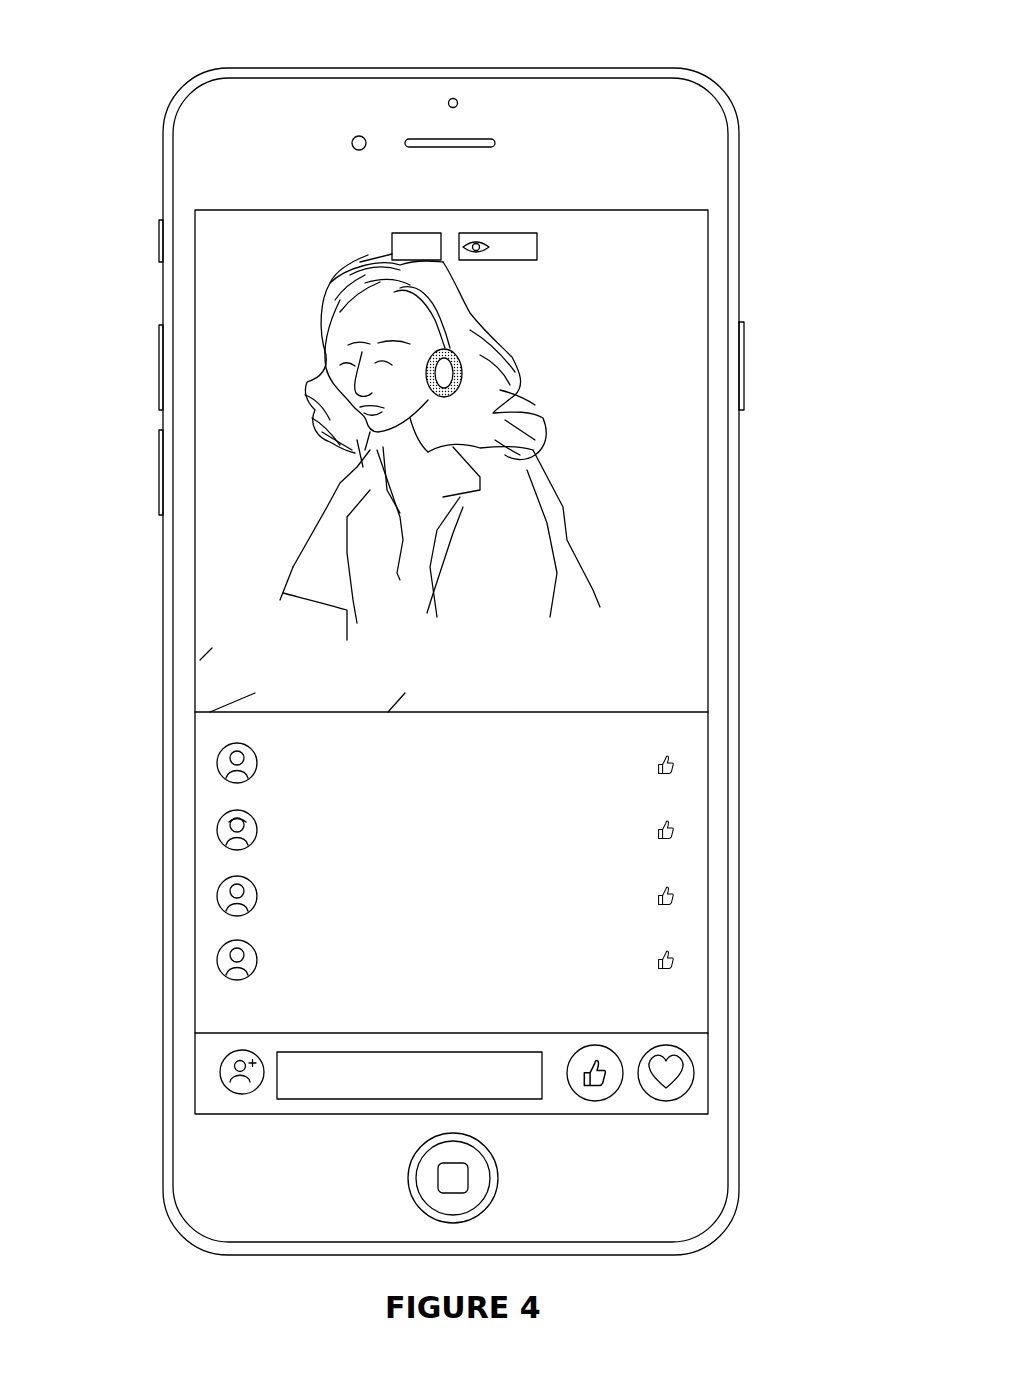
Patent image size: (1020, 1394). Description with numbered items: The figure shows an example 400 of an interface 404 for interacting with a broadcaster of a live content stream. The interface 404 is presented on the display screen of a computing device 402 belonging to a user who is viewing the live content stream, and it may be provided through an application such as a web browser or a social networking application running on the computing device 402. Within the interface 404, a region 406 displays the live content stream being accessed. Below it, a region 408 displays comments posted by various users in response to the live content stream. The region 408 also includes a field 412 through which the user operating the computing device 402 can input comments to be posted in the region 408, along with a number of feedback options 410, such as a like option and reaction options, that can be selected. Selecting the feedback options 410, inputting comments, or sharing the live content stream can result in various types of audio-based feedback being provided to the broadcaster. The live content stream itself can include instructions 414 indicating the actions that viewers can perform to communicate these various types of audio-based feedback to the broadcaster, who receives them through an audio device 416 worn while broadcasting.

The example 400 is at (113, 43).
The computing device 402 is at (741, 180).
The interface 404 is at (190, 290).
The region 406 is at (245, 413).
The region 408 is at (228, 755).
The feedback options 410 is at (612, 1108).
The field 412 is at (268, 1098).
The instructions 414 is at (650, 678).
The audio device 416 is at (520, 360).